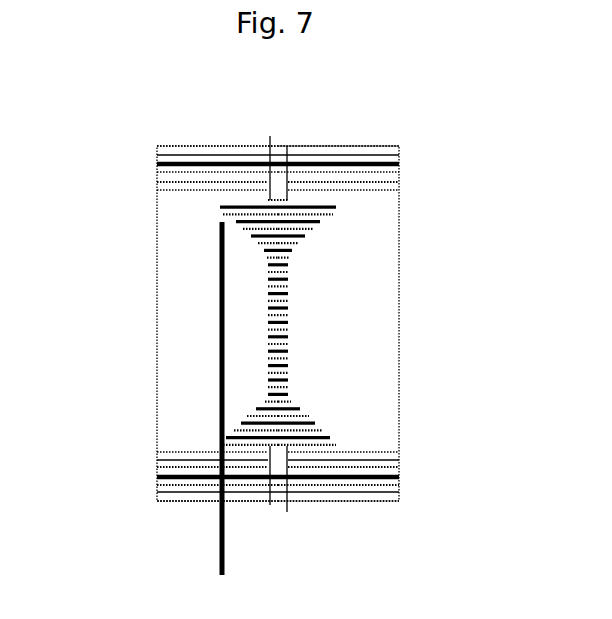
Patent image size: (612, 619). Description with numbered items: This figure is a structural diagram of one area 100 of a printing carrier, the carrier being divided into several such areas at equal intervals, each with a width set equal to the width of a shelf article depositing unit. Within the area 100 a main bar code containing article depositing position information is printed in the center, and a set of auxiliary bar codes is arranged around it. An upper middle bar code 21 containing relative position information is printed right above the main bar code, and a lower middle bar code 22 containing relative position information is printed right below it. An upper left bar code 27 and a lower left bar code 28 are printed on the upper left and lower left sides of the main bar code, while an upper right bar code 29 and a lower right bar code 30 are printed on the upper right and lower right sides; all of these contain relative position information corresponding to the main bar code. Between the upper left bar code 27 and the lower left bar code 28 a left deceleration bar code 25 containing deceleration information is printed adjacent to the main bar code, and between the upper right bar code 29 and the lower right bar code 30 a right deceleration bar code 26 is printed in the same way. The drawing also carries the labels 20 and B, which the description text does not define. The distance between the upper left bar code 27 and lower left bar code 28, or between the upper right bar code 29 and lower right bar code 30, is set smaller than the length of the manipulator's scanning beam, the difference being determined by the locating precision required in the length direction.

The area 100 is at (435, 138).
The substrate body 20 is at (365, 353).
The upper middle bar code 21 is at (284, 165).
The lower middle bar code 22 is at (271, 488).
The left deceleration bar code 25 is at (243, 420).
The right deceleration bar code 26 is at (310, 417).
The upper left bar code 27 is at (168, 183).
The lower left bar code 28 is at (173, 477).
The upper right bar code 29 is at (397, 177).
The lower right bar code 30 is at (378, 473).
The bar B is at (220, 330).